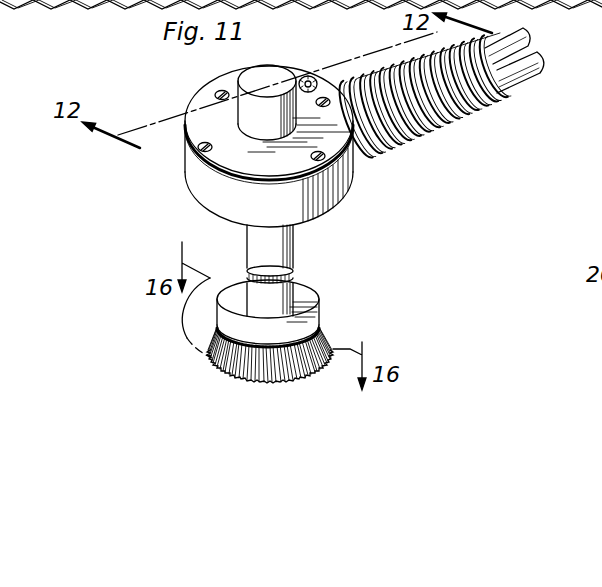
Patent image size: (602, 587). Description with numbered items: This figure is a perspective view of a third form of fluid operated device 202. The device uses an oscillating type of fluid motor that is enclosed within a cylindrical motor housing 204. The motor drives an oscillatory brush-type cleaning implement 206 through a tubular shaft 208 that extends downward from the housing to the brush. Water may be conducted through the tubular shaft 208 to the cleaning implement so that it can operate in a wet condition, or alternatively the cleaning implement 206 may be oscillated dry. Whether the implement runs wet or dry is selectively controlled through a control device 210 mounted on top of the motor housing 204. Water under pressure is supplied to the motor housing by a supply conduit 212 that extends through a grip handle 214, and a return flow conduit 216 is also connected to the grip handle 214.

The fluid operated device 202 is at (193, 98).
The cylindrical motor housing 204 is at (193, 180).
The oscillatory brush-type cleaning implement 206 is at (320, 308).
The tubular shaft 208 is at (292, 251).
The control device 210 is at (272, 76).
The supply conduit 212 is at (528, 41).
The grip handle 214 is at (432, 122).
The return flow conduit 216 is at (518, 82).